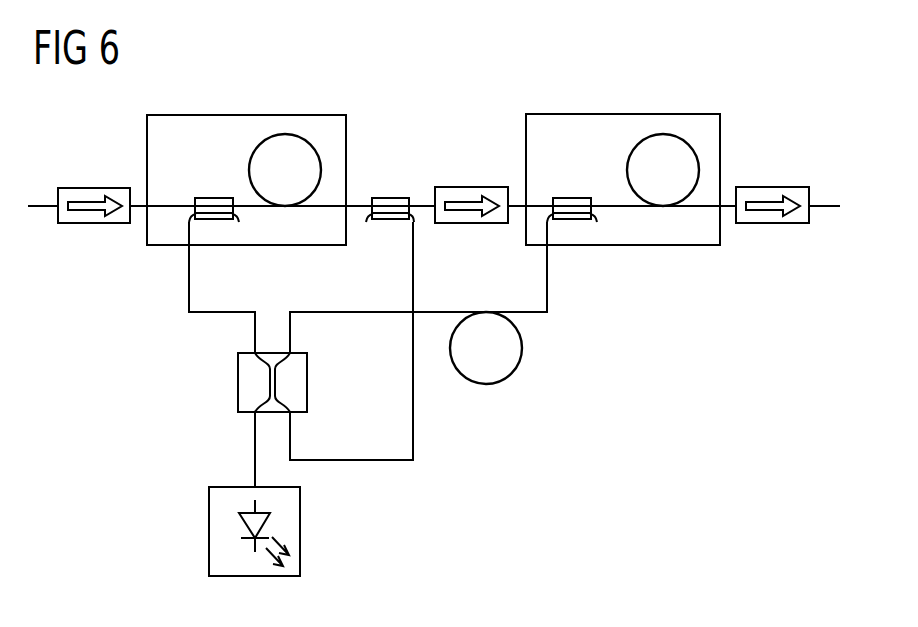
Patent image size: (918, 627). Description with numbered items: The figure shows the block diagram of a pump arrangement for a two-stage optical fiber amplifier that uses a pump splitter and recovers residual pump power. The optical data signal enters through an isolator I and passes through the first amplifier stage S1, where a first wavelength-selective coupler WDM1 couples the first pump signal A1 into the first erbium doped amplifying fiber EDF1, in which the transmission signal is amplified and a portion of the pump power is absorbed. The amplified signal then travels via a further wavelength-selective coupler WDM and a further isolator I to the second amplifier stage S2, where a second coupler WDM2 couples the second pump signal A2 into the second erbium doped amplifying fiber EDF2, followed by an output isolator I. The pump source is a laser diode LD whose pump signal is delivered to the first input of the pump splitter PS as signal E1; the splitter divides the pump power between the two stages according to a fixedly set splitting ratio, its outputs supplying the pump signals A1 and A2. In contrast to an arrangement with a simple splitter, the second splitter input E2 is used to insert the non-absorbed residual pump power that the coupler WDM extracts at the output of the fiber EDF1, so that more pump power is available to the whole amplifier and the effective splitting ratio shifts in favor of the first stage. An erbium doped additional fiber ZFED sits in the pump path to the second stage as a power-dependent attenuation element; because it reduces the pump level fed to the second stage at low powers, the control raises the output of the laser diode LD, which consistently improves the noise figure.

The isolator I is at (95, 188).
The first amplifier stage S1 is at (248, 115).
The second amplifier stage S2 is at (624, 114).
The first erbium doped amplifying fiber EDF1 is at (285, 170).
The second erbium doped amplifying fiber EDF2 is at (663, 170).
The first wavelength-selective coupler WDM1 is at (217, 197).
The further wavelength-selective coupler WDM is at (390, 197).
The second wavelength-selective coupler WDM2 is at (573, 197).
The first pump signal A1 is at (188, 281).
The second pump signal A2 is at (378, 312).
The pump splitter PS is at (307, 381).
The first pump splitter input signal E1 is at (293, 426).
The second pump splitter input signal E2 is at (251, 426).
The laser diode LD is at (302, 529).
The erbium doped additional fiber ZFED is at (487, 385).